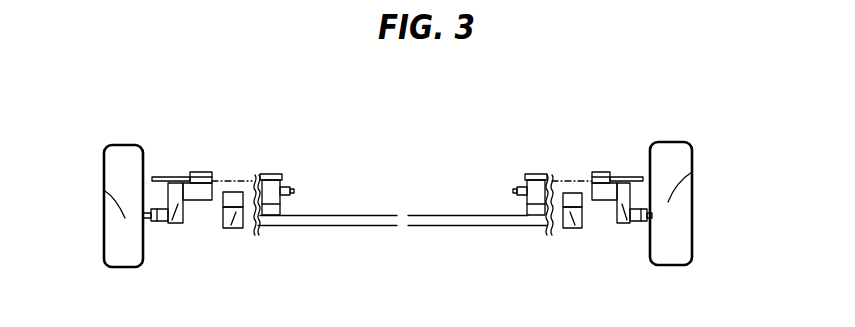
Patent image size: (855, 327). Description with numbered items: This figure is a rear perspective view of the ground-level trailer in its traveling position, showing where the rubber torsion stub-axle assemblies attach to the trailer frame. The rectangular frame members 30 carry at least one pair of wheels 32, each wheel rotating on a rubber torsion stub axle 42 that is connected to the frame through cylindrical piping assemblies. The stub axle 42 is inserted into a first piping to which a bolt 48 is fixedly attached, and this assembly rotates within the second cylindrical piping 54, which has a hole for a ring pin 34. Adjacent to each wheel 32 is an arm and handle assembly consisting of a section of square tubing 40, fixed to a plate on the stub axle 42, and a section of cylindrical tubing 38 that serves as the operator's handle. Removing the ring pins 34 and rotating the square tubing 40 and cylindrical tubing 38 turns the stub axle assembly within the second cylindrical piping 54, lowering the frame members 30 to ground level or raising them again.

The frame members 30 is at (247, 229).
The wheels 32 is at (105, 191).
The ring pins 34 is at (268, 173).
The cylindrical tubing 38 is at (173, 176).
The square tubing 40 is at (203, 173).
The rubber torsion stub axle 42 is at (170, 223).
The bolt 48 is at (293, 202).
The second cylindrical piping 54 is at (244, 179).